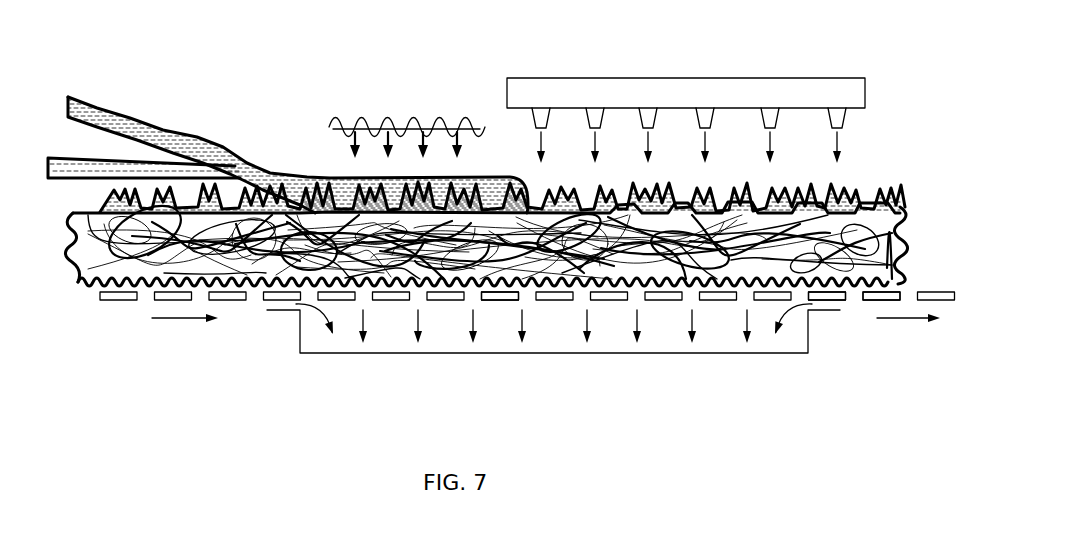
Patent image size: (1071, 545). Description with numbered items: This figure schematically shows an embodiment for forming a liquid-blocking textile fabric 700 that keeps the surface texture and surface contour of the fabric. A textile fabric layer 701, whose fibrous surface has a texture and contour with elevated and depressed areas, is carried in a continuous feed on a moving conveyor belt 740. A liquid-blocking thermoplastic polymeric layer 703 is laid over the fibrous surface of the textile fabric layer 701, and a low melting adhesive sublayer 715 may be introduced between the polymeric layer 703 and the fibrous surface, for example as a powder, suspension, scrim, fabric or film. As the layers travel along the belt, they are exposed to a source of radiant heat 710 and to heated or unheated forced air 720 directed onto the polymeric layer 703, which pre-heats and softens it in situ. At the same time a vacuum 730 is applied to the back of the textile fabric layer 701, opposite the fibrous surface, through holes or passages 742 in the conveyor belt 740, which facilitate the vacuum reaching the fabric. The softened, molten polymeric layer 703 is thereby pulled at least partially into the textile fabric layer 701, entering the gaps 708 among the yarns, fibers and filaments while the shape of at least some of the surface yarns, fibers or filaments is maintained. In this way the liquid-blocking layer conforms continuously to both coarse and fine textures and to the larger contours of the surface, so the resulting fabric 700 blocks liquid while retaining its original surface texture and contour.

The liquid-blocking textile fabric 700 is at (917, 188).
The textile fabric layer 701 is at (64, 268).
The liquid-blocking thermoplastic polymeric layer 703 is at (138, 108).
The gaps 708 is at (881, 148).
The source of heat 710 is at (418, 120).
The low melting adhesive sublayer 715 is at (62, 150).
The air 720 is at (685, 77).
The vacuum 730 is at (573, 343).
The moving conveyor belt 740 is at (118, 310).
The holes or passages 742 is at (473, 293).